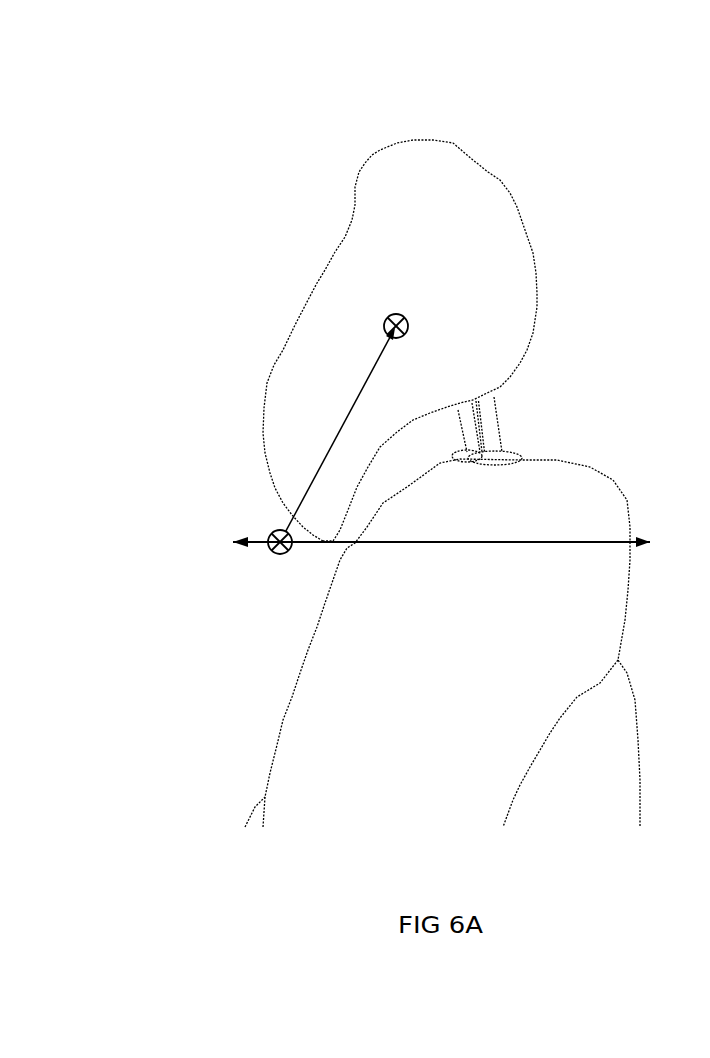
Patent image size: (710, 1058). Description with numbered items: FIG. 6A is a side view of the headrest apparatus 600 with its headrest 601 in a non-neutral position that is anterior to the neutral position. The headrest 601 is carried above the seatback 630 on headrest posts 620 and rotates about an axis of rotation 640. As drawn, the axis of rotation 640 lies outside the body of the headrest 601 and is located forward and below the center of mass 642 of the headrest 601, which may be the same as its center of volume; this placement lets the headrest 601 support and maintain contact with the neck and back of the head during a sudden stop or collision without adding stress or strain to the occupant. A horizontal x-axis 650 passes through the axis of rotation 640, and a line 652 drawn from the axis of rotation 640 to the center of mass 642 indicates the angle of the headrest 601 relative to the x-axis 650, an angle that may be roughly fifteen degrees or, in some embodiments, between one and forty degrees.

The headrest apparatus 600 is at (410, 82).
The headrest 601 is at (498, 217).
The headrest posts 620 is at (493, 425).
The seatback 630 is at (567, 482).
The axis of rotation 640 is at (270, 531).
The center of mass 642 is at (385, 315).
The x-axis 650 is at (387, 543).
The line 652 is at (337, 435).